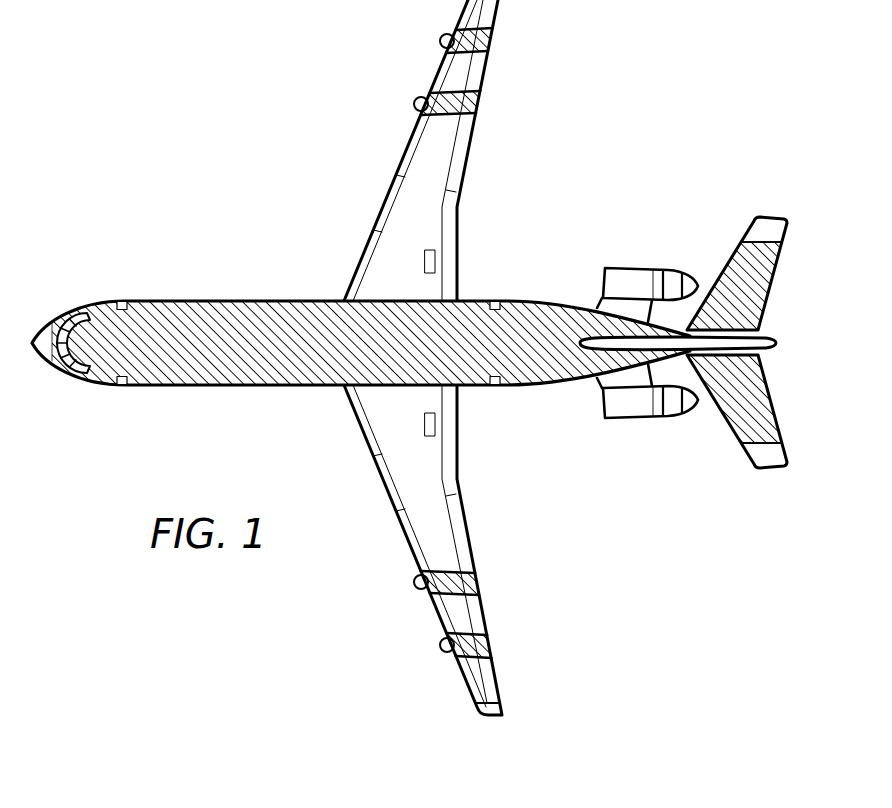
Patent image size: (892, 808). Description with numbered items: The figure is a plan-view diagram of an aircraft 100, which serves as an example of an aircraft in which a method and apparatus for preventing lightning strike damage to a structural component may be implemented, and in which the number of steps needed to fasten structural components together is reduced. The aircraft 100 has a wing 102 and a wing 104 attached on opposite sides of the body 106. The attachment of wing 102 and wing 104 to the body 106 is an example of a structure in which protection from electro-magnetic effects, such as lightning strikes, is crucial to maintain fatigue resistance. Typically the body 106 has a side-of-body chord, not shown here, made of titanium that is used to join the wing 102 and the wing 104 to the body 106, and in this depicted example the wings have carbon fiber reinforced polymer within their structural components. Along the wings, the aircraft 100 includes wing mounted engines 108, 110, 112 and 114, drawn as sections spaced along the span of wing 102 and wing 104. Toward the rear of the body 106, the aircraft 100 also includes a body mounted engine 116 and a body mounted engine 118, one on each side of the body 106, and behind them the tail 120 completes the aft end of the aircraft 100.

The aircraft 100 is at (435, 357).
The wing 102 is at (447, 150).
The wing 104 is at (448, 550).
The body 106 is at (228, 298).
The wing mounted engine 108 is at (493, 41).
The wing mounted engine 110 is at (482, 105).
The wing mounted engine 112 is at (480, 581).
The wing mounted engine 114 is at (493, 642).
The body mounted engine 116 is at (642, 268).
The body mounted engine 118 is at (642, 418).
The tail 120 is at (770, 290).